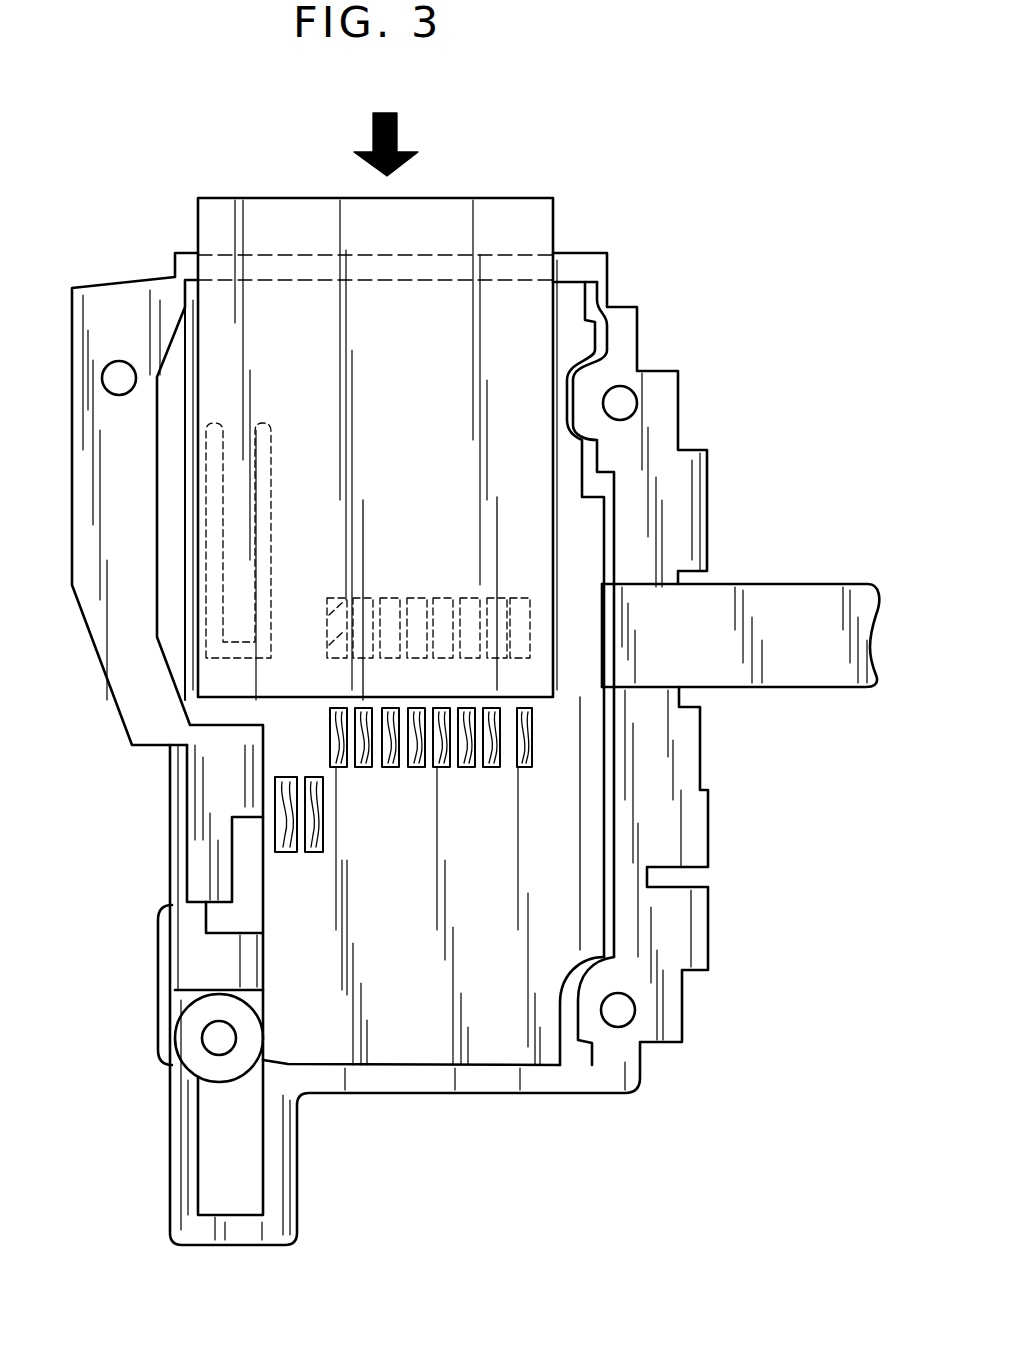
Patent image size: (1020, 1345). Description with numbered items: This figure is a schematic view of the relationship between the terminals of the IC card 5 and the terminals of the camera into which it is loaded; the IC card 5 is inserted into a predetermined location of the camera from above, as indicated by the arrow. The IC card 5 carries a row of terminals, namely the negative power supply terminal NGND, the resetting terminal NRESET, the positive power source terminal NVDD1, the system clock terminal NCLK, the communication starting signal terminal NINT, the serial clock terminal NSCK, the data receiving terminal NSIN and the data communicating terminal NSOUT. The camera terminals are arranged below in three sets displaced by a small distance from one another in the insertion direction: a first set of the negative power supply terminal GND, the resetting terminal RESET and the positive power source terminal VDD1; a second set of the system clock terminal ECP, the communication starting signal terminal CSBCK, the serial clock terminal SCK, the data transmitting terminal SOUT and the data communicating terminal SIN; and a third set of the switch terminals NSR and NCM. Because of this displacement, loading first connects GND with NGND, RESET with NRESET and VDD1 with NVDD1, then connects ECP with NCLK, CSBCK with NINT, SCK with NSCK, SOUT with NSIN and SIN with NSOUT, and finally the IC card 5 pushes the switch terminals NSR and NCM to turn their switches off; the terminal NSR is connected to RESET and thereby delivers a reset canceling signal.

The IC card 5 is at (380, 404).
The camera side switch terminal NCM is at (286, 845).
The camera side switch terminal NSR is at (312, 845).
The data communicating terminal SIN is at (336, 785).
The data transmitting terminal SOUT is at (363, 785).
The serial clock transmitting terminal SCK is at (390, 785).
The communication starting signal transmitting terminal CSBCK is at (416, 785).
The system clock transmitting terminal ECP is at (443, 785).
The positive power source terminal VDD1 is at (468, 785).
The card side microcomputer resetting terminal RESET is at (494, 785).
The negative power supply terminal GND is at (523, 785).
The data communicating terminal NSOUT is at (338, 580).
The data transmitting terminal NSIN is at (364, 600).
The serial clock transmitting terminal NSCK is at (391, 589).
The communication starting signal transmitting terminal NINT is at (418, 592).
The system clock transmitting terminal NCLK is at (444, 589).
The positive power source terminal NVDD1 is at (471, 585).
The card side microcomputer resetting terminal NRESET is at (498, 591).
The negative power supply terminal NGND is at (523, 586).